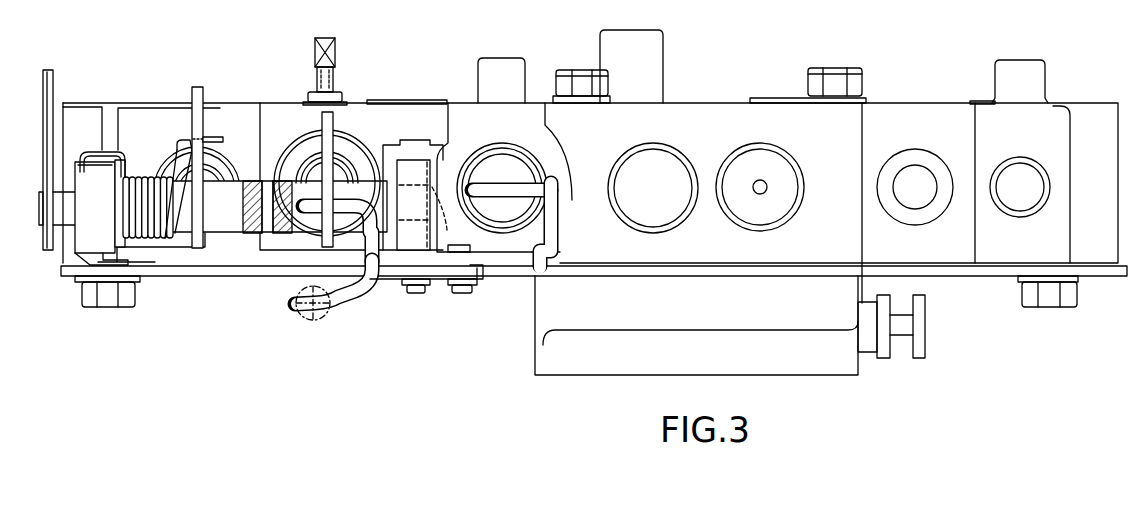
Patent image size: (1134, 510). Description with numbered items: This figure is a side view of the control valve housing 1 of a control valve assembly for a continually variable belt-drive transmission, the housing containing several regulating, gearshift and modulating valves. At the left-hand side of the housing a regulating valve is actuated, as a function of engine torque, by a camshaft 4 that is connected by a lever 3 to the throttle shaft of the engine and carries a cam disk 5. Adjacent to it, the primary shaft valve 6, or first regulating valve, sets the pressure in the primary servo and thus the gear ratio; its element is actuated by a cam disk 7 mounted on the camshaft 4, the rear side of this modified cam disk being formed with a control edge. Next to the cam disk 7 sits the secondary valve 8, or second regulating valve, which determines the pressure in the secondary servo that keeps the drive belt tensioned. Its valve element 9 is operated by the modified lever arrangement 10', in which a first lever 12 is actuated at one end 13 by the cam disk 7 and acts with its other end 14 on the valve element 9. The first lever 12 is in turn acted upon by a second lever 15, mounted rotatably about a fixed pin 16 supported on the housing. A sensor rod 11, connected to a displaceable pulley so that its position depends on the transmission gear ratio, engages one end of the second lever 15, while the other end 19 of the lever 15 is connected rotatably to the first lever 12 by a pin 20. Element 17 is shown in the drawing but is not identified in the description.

The control valve housing 1 is at (728, 98).
The lever 3 is at (45, 135).
The camshaft 4 is at (218, 228).
The cam disk 5 is at (197, 222).
The primary shaft valve 6 is at (356, 136).
The cam disk 7 is at (328, 145).
The secondary valve 8 is at (527, 143).
The valve element 9 is at (480, 163).
The lever arrangement 10' is at (369, 317).
The sensor rod 11 is at (302, 317).
The first lever 12 is at (523, 258).
The end of first lever 13 is at (306, 204).
The other end of first lever 14 is at (516, 180).
The second lever 15 is at (442, 272).
The fixed pin 16 is at (416, 293).
The terminal block 17 is at (407, 238).
The other end of second lever 19 is at (483, 275).
The pin 20 is at (466, 293).